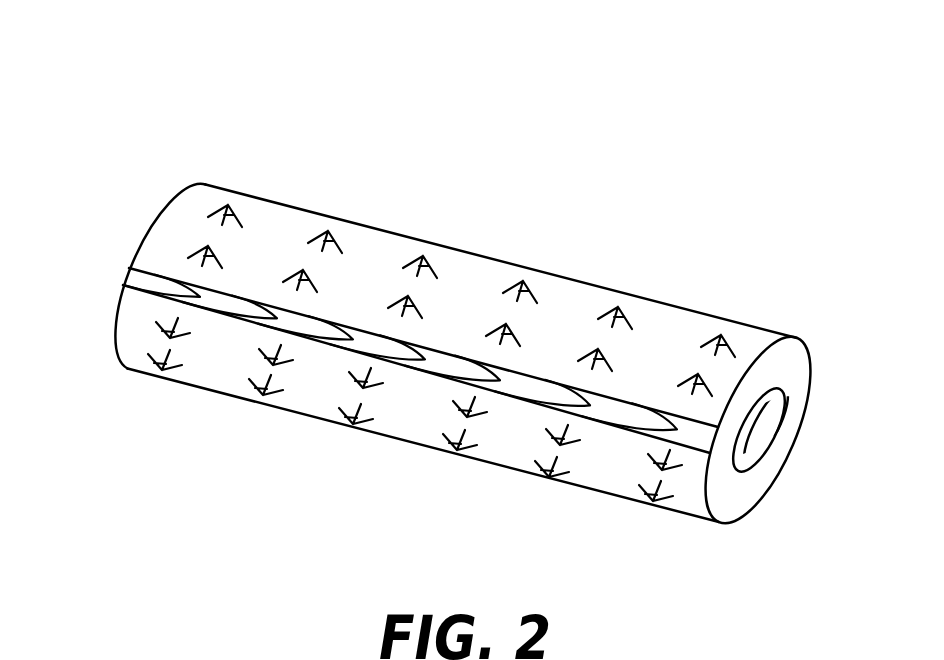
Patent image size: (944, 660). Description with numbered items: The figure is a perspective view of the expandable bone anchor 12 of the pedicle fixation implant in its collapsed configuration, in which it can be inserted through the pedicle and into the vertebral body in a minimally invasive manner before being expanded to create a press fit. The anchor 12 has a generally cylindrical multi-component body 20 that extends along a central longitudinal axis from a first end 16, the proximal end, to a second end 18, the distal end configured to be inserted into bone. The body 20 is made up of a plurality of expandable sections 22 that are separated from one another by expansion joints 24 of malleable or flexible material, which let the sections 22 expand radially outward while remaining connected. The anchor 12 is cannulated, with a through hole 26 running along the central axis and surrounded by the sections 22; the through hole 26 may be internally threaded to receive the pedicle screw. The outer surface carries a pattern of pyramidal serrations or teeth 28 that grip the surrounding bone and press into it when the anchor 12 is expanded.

The expandable bone anchor 12 is at (215, 88).
The first end 16 is at (803, 362).
The second end 18 is at (168, 209).
The multi-component body 20 is at (468, 263).
The expandable sections 22 is at (553, 275).
The expansion joints 24 is at (145, 284).
The through hole 26 is at (755, 437).
The teeth 28 is at (626, 320).